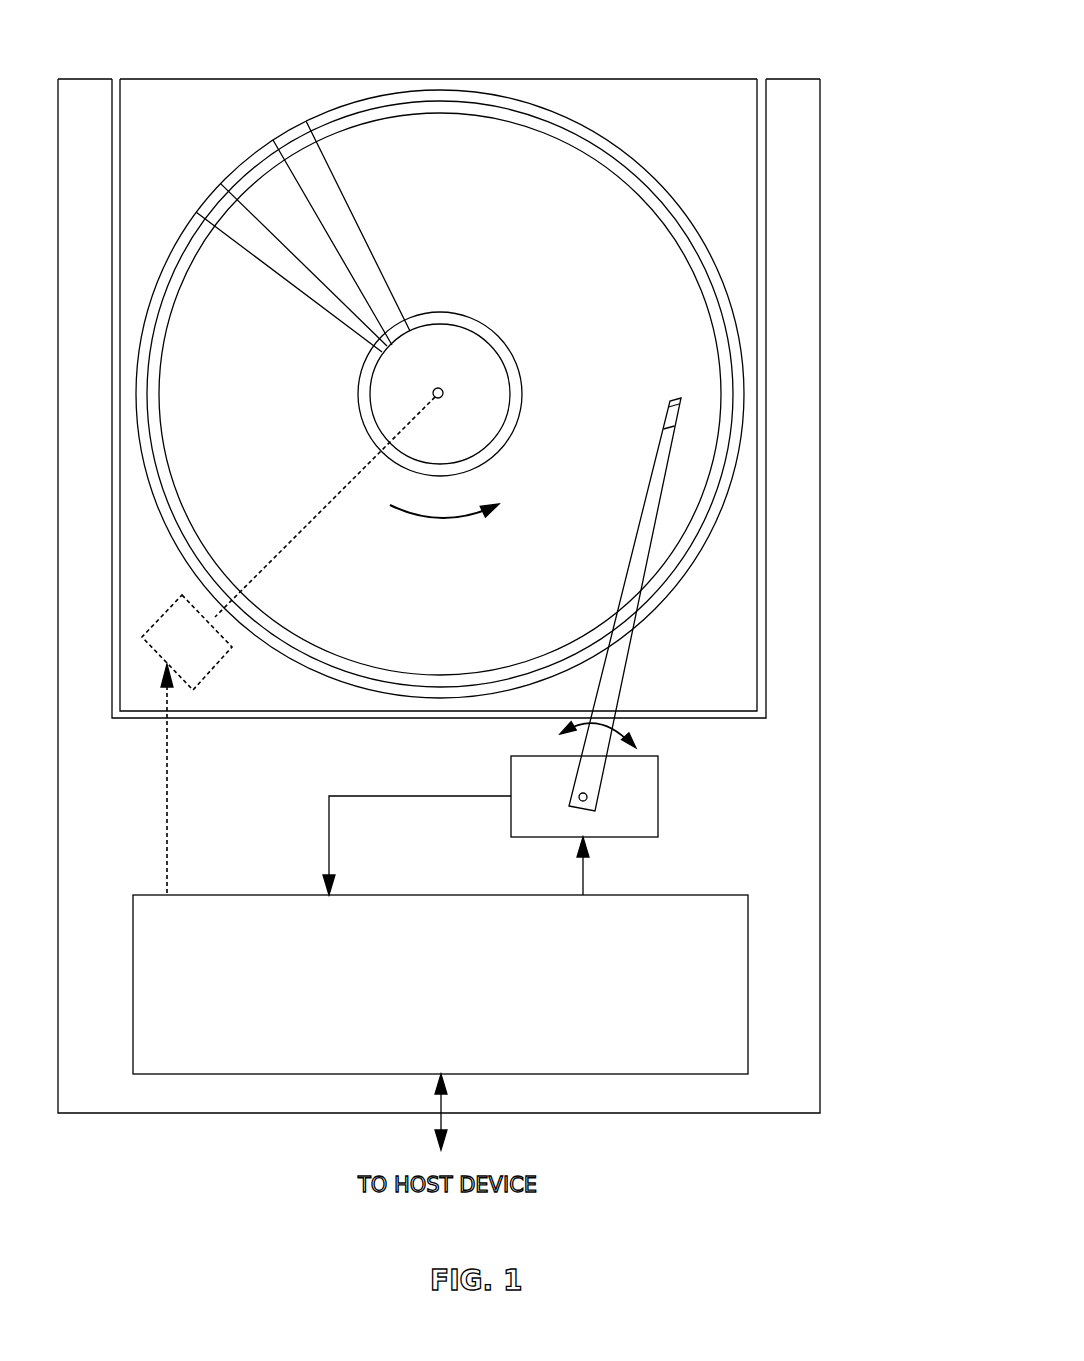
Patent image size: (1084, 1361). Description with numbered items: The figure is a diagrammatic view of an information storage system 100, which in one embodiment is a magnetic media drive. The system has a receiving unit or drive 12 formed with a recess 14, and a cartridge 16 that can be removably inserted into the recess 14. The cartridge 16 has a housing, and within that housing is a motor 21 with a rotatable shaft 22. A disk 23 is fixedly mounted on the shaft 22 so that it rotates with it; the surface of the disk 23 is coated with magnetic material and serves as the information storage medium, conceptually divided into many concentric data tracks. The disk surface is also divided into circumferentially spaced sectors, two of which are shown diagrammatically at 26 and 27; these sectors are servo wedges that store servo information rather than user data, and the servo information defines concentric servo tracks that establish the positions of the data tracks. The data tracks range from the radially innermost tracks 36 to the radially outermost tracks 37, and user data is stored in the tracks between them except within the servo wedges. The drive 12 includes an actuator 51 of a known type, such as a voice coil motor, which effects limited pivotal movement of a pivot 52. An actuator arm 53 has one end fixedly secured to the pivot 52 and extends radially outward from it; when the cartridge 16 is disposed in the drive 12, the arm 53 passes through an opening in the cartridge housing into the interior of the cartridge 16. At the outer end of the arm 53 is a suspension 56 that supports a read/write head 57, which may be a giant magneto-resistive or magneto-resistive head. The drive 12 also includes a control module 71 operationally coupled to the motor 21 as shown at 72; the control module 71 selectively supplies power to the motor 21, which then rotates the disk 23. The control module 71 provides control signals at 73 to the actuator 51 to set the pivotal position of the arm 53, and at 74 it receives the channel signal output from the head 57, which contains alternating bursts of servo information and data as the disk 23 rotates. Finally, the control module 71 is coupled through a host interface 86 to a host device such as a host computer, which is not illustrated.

The hard disk drive 100 is at (872, 95).
The drive 12 is at (87, 79).
The recess 14 is at (762, 79).
The cartridge 16 is at (577, 79).
The motor 21 is at (288, 543).
The rotatable shaft 22 is at (443, 398).
The disk 23 is at (660, 182).
The sector 26 is at (330, 300).
The sector 27 is at (385, 302).
The radially innermost tracks 36 is at (496, 340).
The radially outermost tracks 37 is at (375, 667).
The actuator 51 is at (584, 796).
The pivot 52 is at (587, 793).
The actuator arm 53 is at (633, 582).
The suspension 56 is at (667, 425).
The read/write head 57 is at (670, 400).
The control module 71 is at (453, 895).
The operational coupling 72 is at (167, 860).
The control signals 73 is at (590, 886).
The channel signal 74 is at (387, 795).
The host interface 86 is at (440, 1118).